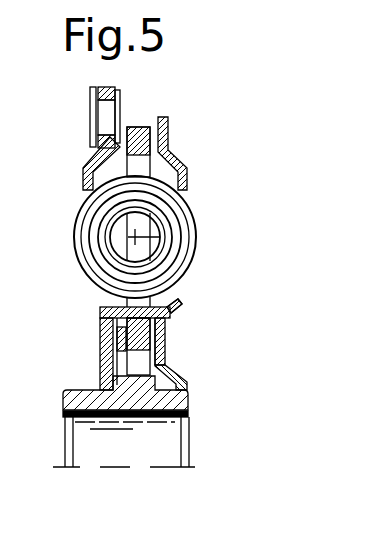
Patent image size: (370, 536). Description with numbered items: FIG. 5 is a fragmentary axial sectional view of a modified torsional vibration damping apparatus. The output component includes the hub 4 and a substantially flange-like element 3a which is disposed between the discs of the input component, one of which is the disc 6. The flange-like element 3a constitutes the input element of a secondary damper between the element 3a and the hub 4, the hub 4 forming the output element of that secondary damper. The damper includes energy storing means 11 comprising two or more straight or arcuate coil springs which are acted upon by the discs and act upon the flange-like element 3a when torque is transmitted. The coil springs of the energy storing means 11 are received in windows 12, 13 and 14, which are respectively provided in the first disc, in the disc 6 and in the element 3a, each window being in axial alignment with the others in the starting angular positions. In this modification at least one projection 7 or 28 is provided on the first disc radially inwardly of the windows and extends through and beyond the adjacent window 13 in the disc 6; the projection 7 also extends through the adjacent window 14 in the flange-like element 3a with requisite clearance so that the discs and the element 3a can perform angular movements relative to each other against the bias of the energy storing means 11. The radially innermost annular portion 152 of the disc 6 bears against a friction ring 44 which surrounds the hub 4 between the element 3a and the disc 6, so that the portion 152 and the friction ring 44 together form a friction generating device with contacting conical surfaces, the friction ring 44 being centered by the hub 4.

The flange-like element 3a is at (137, 127).
The disc 6 is at (170, 132).
The energy storing means 11 is at (197, 217).
The window 13 is at (183, 293).
The window 14 is at (160, 237).
The window 12 is at (98, 302).
The projection 7 is at (180, 308).
The projection 28 is at (174, 306).
The radially innermost annular portion 152 is at (183, 363).
The friction ring 44 is at (183, 387).
The hub 4 is at (67, 408).